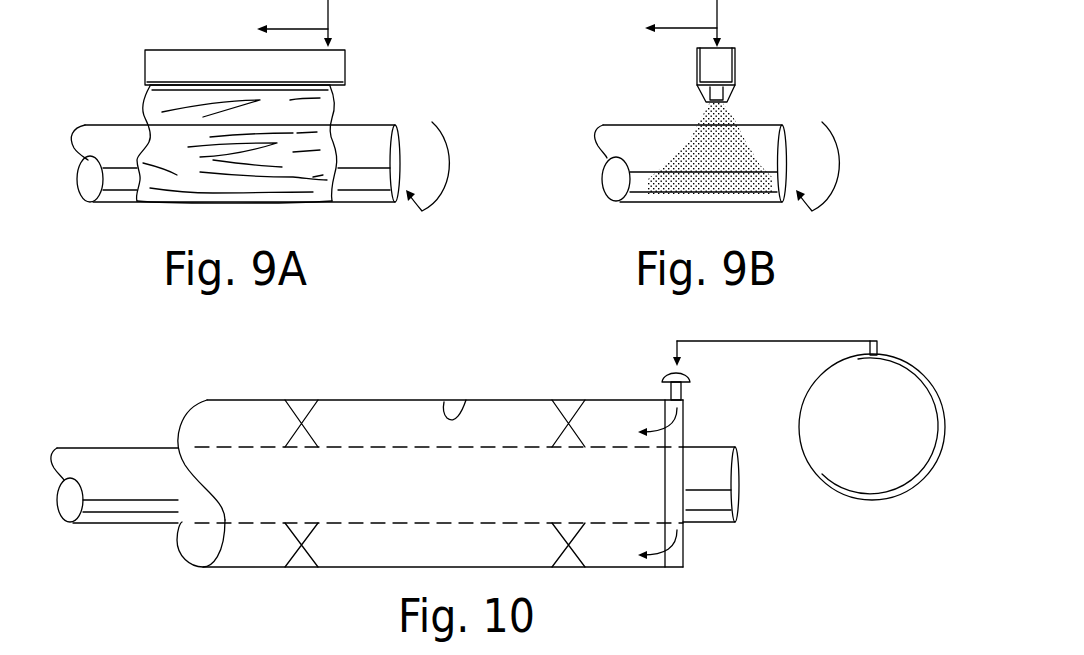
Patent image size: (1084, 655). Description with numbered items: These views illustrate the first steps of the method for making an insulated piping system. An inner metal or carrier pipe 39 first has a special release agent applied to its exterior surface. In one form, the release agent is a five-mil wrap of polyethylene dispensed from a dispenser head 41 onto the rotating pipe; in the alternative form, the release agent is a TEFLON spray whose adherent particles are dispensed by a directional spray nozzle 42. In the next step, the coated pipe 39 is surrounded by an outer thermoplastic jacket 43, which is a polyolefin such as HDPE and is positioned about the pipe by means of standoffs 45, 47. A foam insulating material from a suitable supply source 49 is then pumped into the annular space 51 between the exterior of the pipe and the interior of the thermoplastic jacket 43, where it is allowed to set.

In FIG. 10, the inner metal pipe 39 is at (115, 447).
In FIG. 9A, the dispenser head 41 is at (333, 70).
In FIG. 9B, the directional spray nozzle 42 is at (723, 65).
In FIG. 10, the outer thermoplastic jacket 43 is at (372, 400).
In FIG. 10, the standoff 45 is at (307, 415).
In FIG. 10, the standoff 47 is at (580, 410).
In FIG. 10, the supply source 49 is at (888, 377).
In FIG. 10, the annular space 51 is at (466, 400).